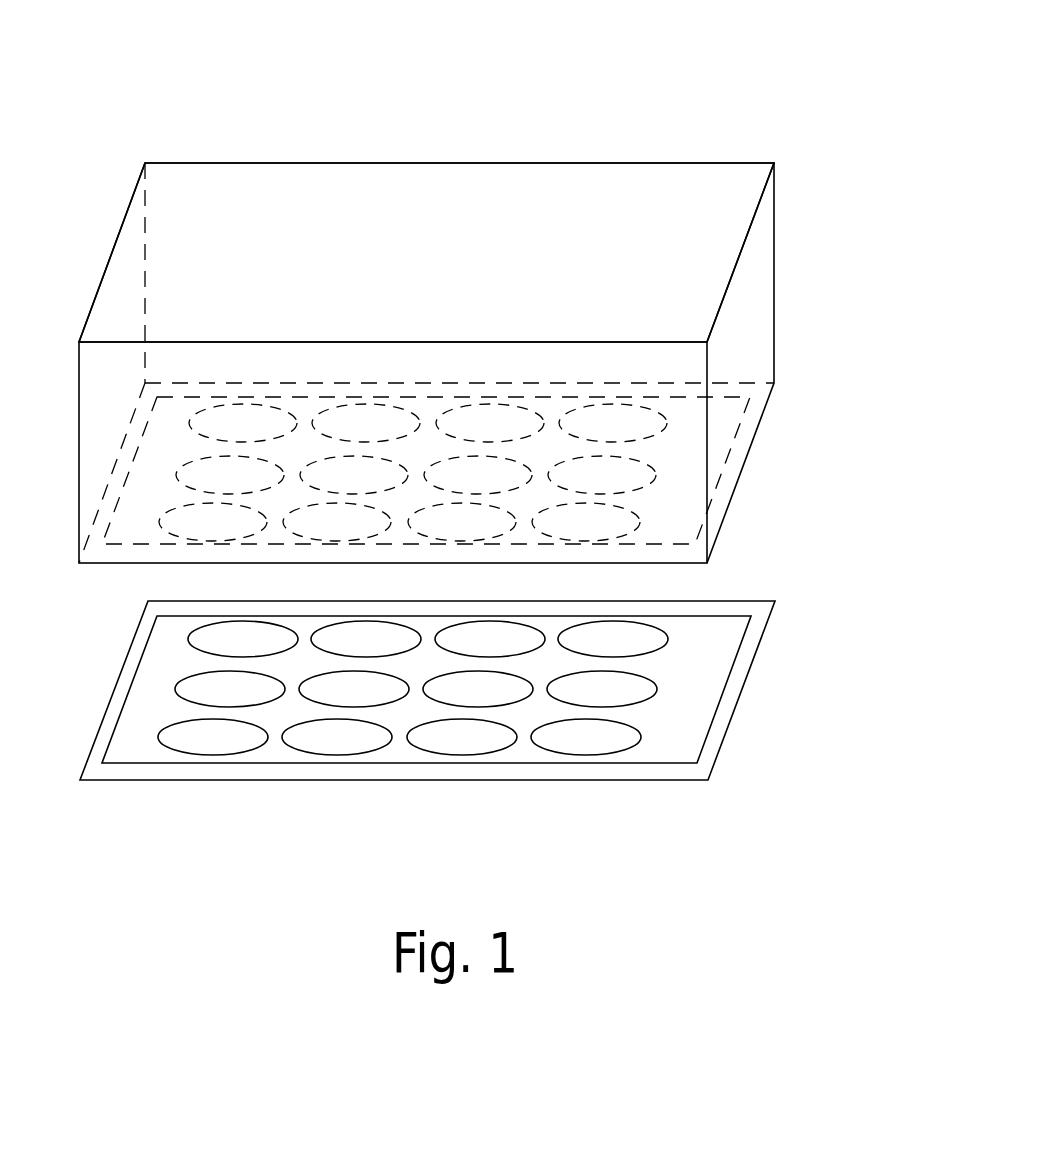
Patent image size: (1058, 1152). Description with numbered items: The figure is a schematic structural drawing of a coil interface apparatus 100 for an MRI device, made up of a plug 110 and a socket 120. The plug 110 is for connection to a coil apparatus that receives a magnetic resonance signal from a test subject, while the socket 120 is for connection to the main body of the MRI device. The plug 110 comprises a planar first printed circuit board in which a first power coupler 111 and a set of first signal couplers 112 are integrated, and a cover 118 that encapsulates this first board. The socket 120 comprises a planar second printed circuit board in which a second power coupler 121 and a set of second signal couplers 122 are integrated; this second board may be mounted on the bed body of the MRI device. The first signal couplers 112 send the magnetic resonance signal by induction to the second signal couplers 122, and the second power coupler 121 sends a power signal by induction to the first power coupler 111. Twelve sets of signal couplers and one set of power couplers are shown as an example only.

The coil interface apparatus 100 is at (185, 117).
The plug 110 is at (805, 298).
The cover 118 is at (608, 160).
The first power coupler 111 is at (718, 473).
The first signal coupler 112 is at (182, 533).
The socket 120 is at (763, 738).
The second power coupler 121 is at (735, 645).
The second signal coupler 122 is at (188, 749).